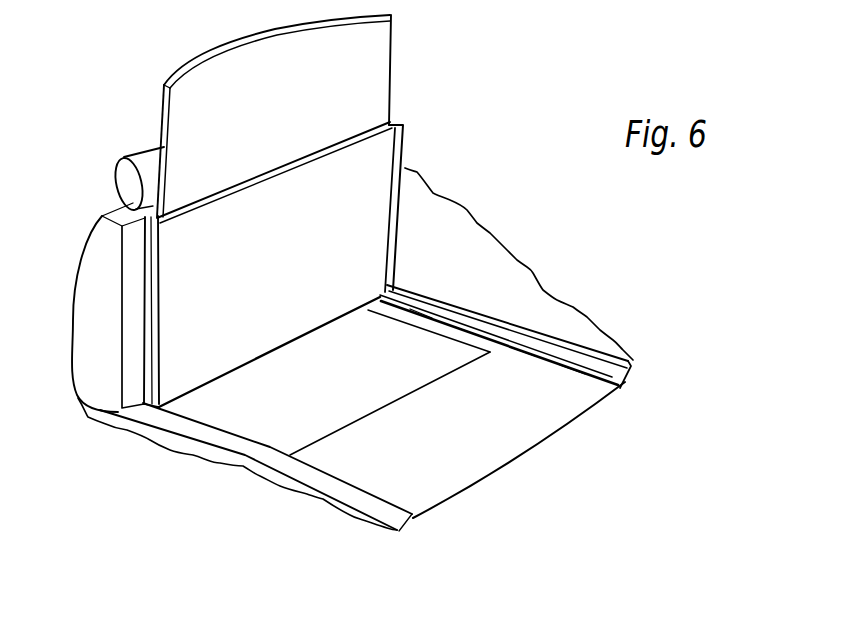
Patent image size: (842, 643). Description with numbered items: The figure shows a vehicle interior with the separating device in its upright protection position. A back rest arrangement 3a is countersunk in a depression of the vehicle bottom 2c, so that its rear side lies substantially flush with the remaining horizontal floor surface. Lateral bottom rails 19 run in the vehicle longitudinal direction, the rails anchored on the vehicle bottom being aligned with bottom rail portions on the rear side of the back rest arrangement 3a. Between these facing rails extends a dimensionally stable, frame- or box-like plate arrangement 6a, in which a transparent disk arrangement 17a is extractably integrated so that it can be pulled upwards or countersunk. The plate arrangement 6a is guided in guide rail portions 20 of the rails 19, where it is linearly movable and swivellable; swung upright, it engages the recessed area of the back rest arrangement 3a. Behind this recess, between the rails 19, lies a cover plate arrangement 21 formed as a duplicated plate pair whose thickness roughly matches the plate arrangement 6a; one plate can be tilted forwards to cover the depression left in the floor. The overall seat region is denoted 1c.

The transparent disk arrangement 17a is at (387, 83).
The plate arrangement 6a is at (287, 284).
The vehicle seat 1c is at (479, 240).
The back rest arrangement 3a is at (98, 290).
The guide rail portions 20 is at (457, 318).
The bottom rails 19 is at (600, 363).
The cover plate arrangement 21 is at (523, 428).
The vehicle bottom 2c is at (282, 482).